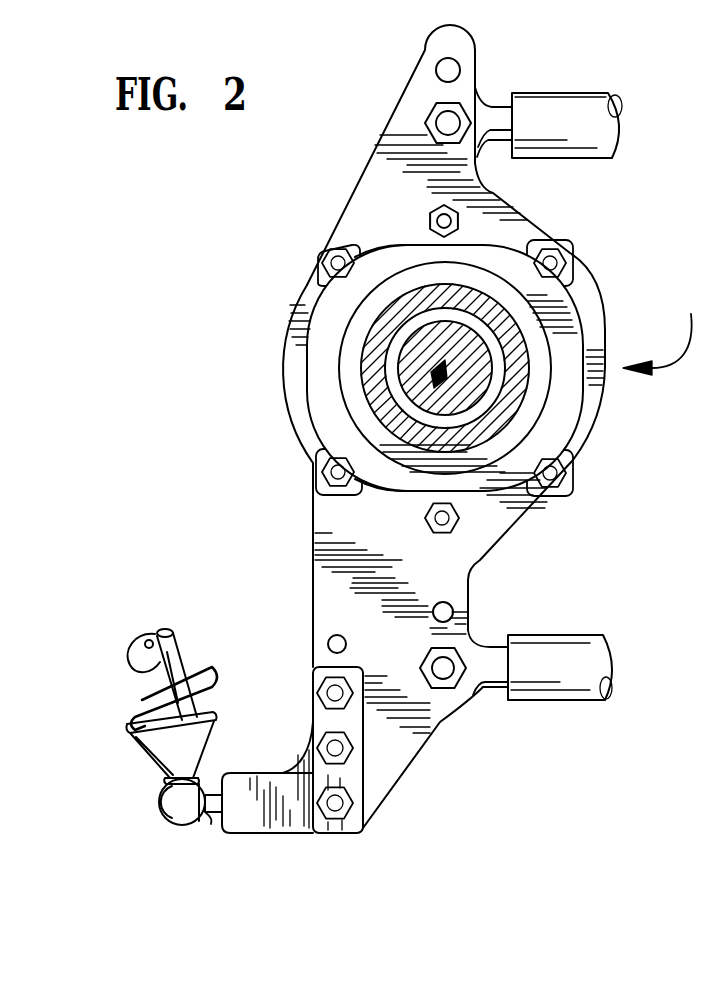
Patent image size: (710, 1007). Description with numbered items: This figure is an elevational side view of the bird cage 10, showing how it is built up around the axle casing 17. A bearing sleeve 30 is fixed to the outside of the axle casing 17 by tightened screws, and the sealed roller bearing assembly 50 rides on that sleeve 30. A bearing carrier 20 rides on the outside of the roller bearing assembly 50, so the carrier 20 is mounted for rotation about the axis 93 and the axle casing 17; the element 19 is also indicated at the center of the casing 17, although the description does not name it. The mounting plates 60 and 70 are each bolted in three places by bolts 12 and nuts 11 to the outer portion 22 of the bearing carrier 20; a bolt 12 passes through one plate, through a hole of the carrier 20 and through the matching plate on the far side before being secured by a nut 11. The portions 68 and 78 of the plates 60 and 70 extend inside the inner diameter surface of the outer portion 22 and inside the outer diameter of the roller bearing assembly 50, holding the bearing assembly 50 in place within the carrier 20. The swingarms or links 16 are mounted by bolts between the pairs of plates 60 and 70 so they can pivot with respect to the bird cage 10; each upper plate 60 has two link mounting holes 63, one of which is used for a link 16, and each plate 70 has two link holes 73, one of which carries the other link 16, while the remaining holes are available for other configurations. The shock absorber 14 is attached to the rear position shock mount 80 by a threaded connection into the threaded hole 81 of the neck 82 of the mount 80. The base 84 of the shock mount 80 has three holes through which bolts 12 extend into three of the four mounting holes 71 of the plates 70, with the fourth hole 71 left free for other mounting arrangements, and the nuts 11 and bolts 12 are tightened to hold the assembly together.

The bird cage 10 is at (663, 330).
The nut 11 is at (432, 214).
The bolt 12 is at (427, 127).
The shock absorber 14 is at (188, 656).
The swingarm or link 16 is at (560, 93).
The axle casing 17 is at (527, 338).
The axle shaft 19 is at (402, 338).
The bearing carrier 20 is at (287, 404).
The outer portion of the bearing carrier 22 is at (305, 300).
The bearing sleeve 30 is at (540, 382).
The sealed roller bearing assembly 50 is at (562, 418).
The upper mounting plate 60 is at (513, 227).
The swingarm or link mounting hole 63 is at (459, 63).
The portion of plate 60 68 is at (405, 249).
The mounting plate 70 is at (400, 740).
The mounting hole 71 is at (368, 622).
The link hole 73 is at (446, 601).
The portion of plate 70 78 is at (413, 490).
The rear position shock mount 80 is at (310, 720).
The threaded hole 81 is at (220, 818).
The neck 82 is at (250, 772).
The base 84 is at (352, 775).
The axis 93 is at (410, 390).